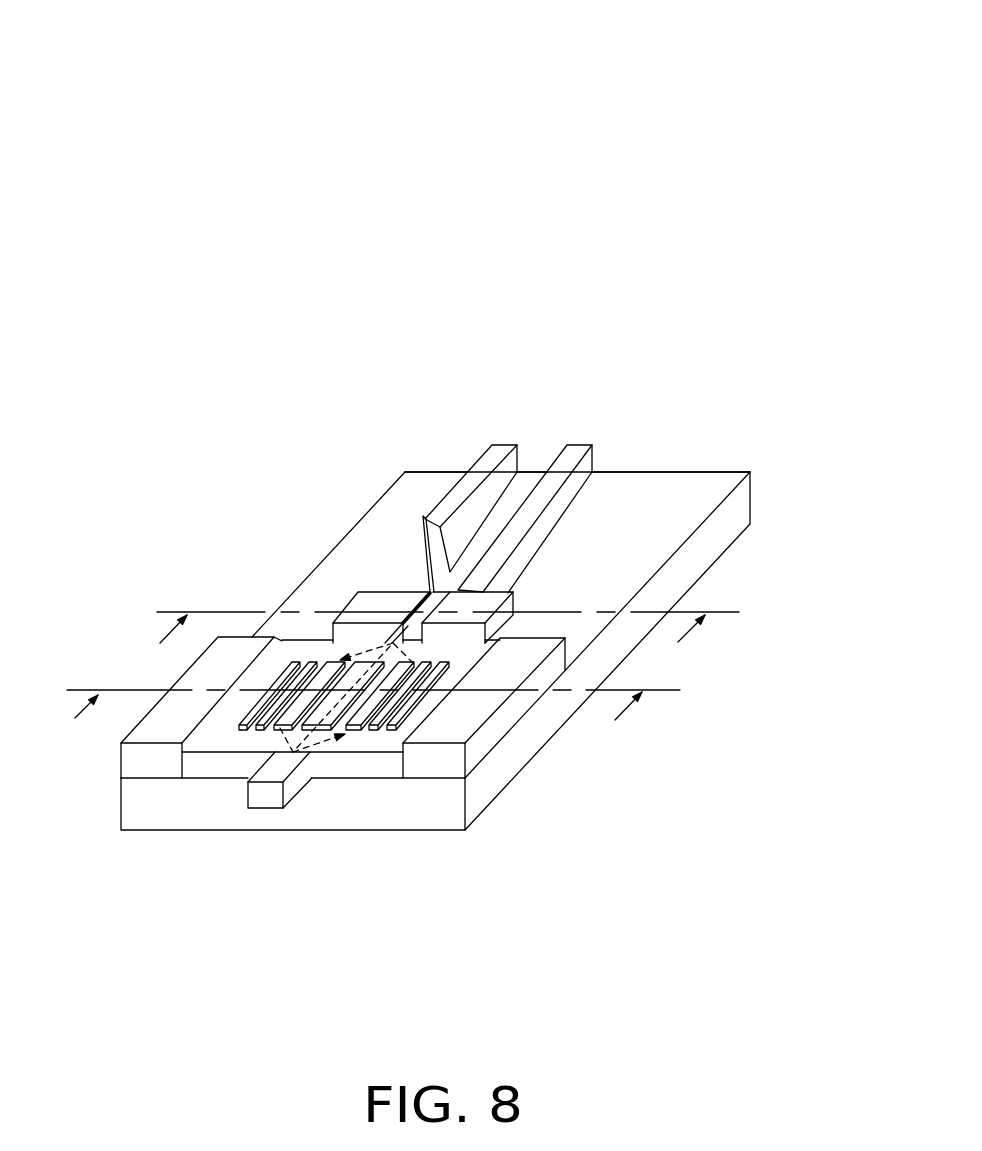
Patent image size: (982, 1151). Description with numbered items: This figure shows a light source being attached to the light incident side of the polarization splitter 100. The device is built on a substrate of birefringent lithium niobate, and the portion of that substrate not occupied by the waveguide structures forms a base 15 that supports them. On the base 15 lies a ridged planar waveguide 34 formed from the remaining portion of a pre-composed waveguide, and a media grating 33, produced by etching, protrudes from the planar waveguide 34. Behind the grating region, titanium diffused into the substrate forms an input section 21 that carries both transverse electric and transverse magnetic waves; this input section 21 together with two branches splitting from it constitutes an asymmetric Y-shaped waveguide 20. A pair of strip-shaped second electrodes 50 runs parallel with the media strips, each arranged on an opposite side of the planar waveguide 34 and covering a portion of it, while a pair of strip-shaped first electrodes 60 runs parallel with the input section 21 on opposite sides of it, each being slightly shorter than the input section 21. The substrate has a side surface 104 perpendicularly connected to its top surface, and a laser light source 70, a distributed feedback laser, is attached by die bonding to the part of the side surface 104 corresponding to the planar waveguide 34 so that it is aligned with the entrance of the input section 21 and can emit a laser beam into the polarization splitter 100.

The polarization splitter 100 is at (466, 31).
The base 15 is at (702, 548).
The asymmetric Y-shaped waveguide 20 is at (422, 566).
The input section 21 is at (426, 560).
The media grating 33 is at (352, 731).
The planar waveguide 34 is at (218, 768).
The strip-shaped second electrodes 50 is at (485, 742).
The strip-shaped first electrodes 60 is at (483, 592).
The laser light source 70 is at (263, 800).
The side surface 104 is at (373, 767).